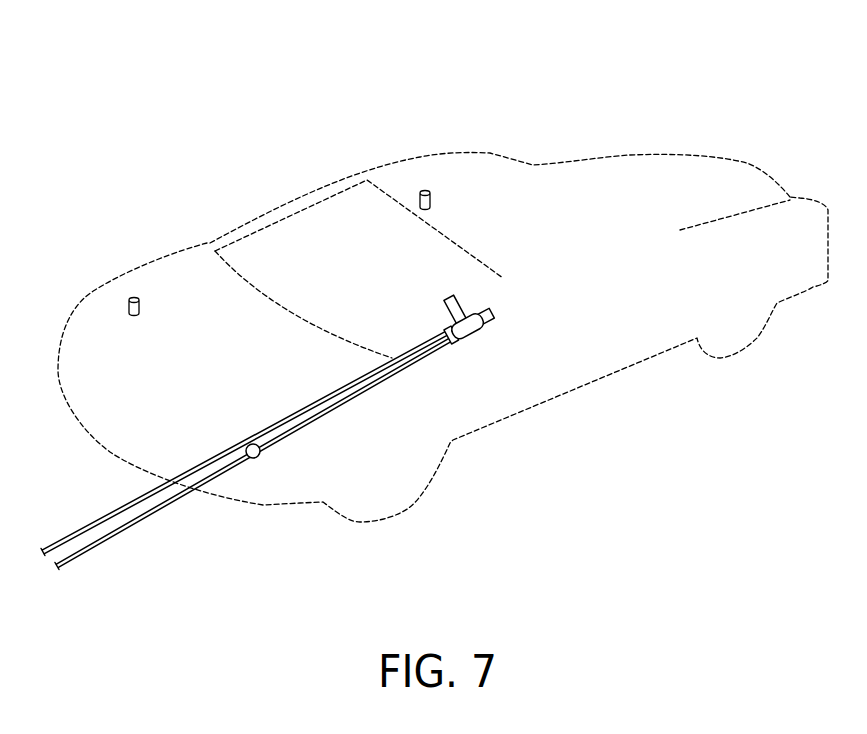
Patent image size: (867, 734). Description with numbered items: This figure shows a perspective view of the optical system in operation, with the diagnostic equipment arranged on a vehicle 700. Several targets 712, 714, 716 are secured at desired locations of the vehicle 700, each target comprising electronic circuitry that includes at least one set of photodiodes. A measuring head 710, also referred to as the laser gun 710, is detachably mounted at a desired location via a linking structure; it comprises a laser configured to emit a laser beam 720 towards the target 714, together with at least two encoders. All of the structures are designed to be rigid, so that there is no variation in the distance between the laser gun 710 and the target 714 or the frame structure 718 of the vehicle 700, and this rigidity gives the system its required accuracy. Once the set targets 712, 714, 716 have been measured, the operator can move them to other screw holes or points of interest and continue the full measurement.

The vehicle 700 is at (687, 85).
The measuring head 710 is at (479, 330).
The target 712 is at (134, 297).
The target 714 is at (255, 458).
The target 716 is at (425, 191).
The frame structure 718 is at (533, 165).
The laser beam 720 is at (155, 512).